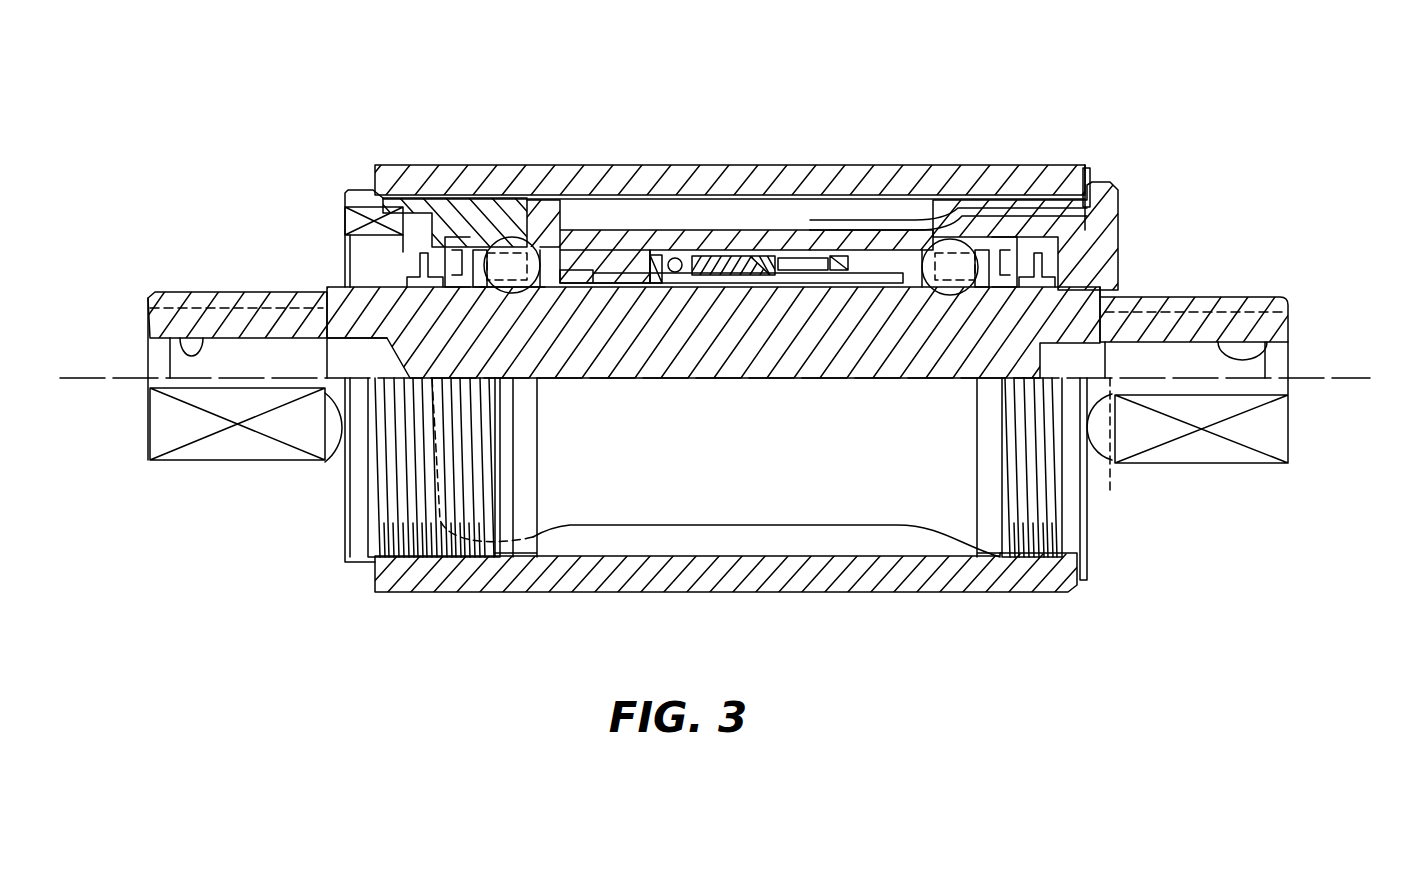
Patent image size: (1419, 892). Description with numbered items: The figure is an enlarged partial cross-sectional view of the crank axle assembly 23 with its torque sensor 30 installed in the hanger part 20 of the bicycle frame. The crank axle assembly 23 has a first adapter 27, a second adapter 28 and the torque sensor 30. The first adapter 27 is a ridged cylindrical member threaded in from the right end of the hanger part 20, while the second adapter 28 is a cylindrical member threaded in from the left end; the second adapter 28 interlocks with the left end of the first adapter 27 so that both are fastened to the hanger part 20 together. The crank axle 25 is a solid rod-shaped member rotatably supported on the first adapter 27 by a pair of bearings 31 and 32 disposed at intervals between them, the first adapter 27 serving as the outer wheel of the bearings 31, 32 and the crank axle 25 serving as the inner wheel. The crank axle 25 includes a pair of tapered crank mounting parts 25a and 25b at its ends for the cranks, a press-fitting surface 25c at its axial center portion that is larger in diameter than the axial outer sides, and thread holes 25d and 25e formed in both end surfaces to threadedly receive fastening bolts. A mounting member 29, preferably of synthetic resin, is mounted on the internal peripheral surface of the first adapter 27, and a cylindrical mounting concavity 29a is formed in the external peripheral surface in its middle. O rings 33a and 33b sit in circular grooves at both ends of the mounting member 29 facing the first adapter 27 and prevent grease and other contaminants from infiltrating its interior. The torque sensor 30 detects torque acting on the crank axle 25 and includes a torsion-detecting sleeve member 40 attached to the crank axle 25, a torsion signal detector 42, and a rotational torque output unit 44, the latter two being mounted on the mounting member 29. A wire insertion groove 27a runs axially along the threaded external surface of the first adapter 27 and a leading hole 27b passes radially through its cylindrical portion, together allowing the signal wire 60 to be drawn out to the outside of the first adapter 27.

The hanger part 20 is at (398, 172).
The crank axle assembly 23 is at (771, 208).
The crank axle 25 is at (305, 268).
The crank mounting part 25a is at (219, 293).
The crank mounting part 25b is at (1200, 297).
The press-fitting surface 25c is at (510, 250).
The thread hole 25d is at (122, 296).
The thread hole 25e is at (1285, 340).
The first adapter 27 is at (1001, 184).
The wire insertion groove 27a is at (922, 206).
The leading hole 27b is at (830, 268).
The second adapter 28 is at (450, 207).
The mounting member 29 is at (623, 283).
The mounting concavity 29a is at (668, 262).
The torque sensor 30 is at (747, 240).
The bearing 31 is at (507, 250).
The bearing 32 is at (948, 245).
The O ring 33a is at (657, 263).
The O ring 33b is at (842, 262).
The torsion-detecting sleeve member 40 is at (597, 268).
The torsion signal detector 42 is at (722, 267).
The rotational torque output unit 44 is at (796, 246).
The signal wire 60 is at (904, 222).